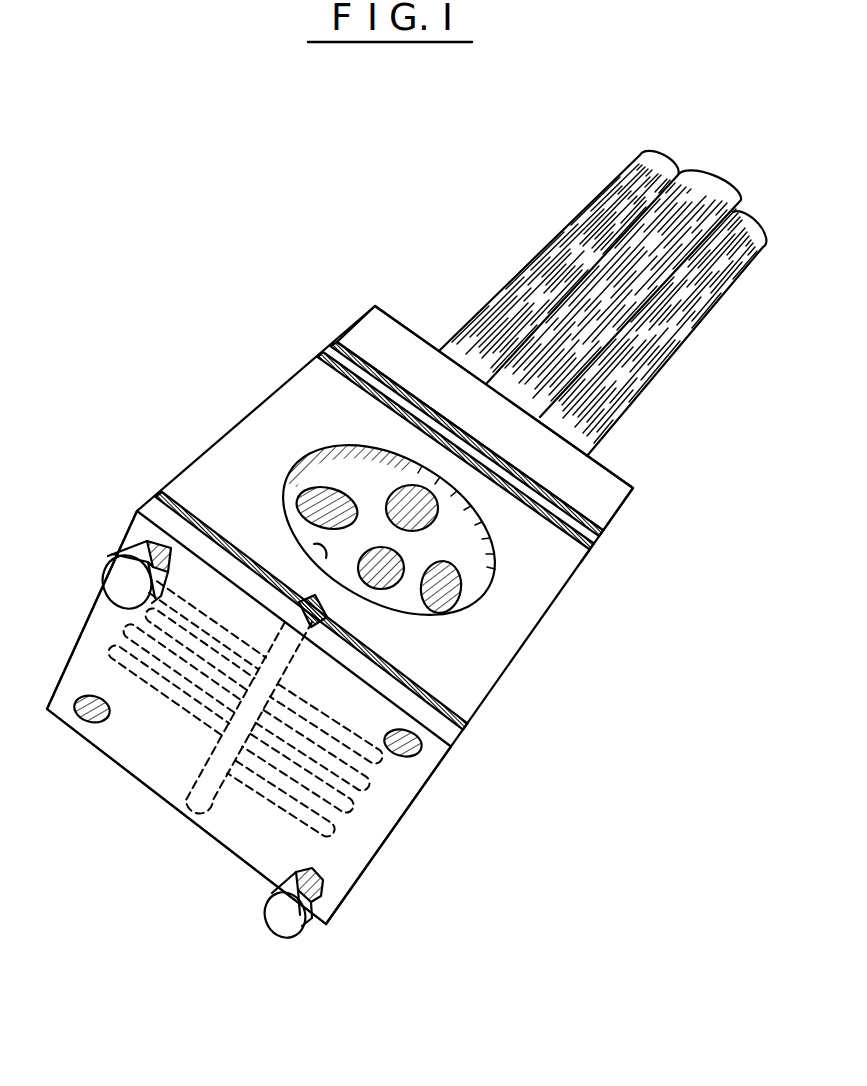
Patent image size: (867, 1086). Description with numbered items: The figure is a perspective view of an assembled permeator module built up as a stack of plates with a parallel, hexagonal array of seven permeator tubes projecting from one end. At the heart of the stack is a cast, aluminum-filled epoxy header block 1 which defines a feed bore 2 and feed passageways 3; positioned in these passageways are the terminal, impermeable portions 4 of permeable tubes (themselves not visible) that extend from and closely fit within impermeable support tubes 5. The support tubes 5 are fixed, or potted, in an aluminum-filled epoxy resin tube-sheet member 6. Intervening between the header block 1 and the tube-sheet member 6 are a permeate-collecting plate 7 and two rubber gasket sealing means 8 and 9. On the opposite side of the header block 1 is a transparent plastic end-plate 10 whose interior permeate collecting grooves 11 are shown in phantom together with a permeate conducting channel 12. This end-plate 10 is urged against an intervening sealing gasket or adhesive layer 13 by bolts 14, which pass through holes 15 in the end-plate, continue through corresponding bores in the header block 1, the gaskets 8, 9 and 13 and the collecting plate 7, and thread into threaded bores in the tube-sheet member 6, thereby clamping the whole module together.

The header block 1 is at (542, 621).
The feed bore 2 is at (470, 556).
The feed passageways 3 is at (330, 503).
The terminal impermeable portions 4 is at (438, 493).
The impermeable support tubes 5 is at (642, 392).
The tube-sheet member 6 is at (632, 503).
The permeate-collecting plate 7 is at (602, 542).
The sealing means 8 is at (596, 558).
The sealing means 9 is at (611, 532).
The end-plate 10 is at (155, 797).
The permeate collecting grooves 11 is at (110, 650).
The permeate conducting channel 12 is at (327, 609).
The sealing gasket 13 is at (159, 487).
The bolts 14 is at (101, 568).
The holes 15 is at (78, 716).